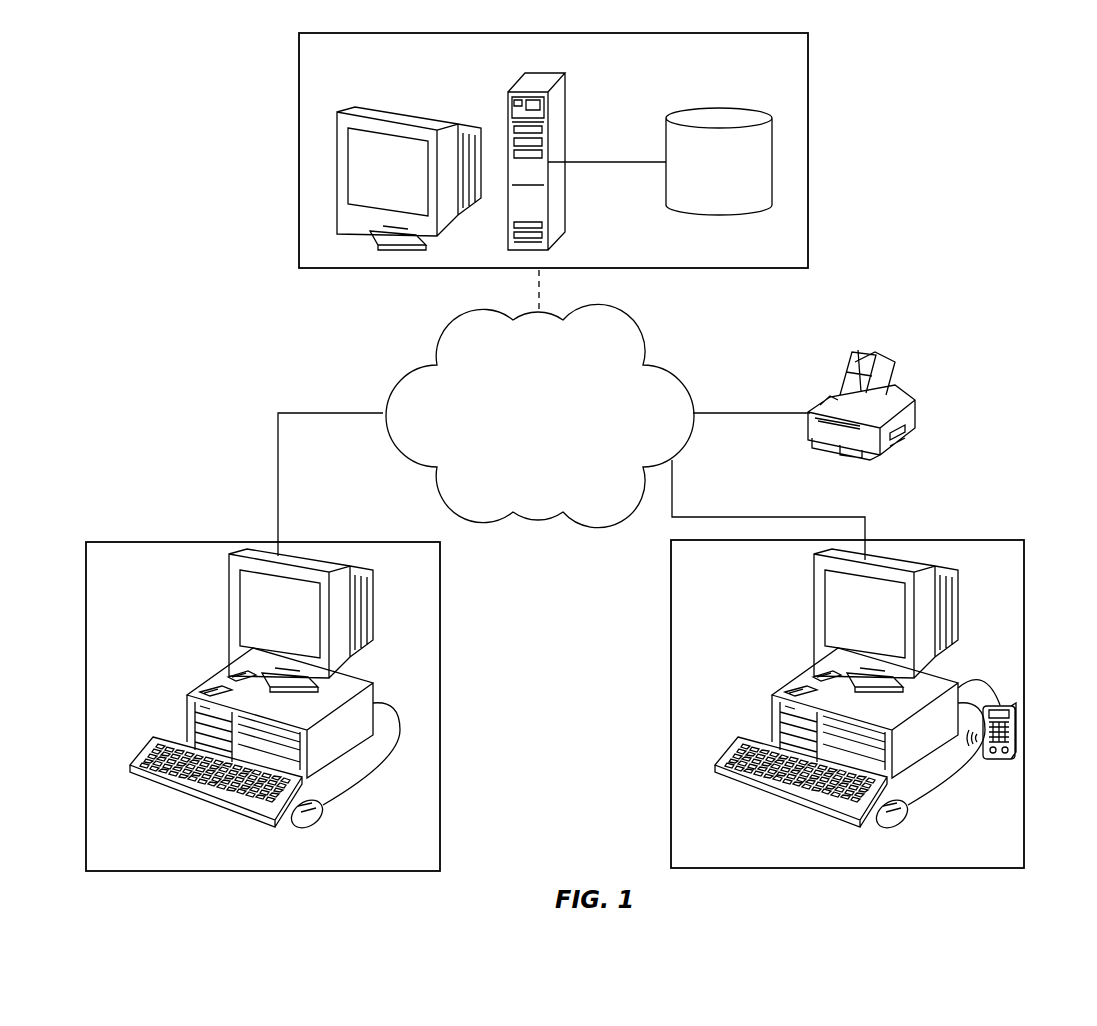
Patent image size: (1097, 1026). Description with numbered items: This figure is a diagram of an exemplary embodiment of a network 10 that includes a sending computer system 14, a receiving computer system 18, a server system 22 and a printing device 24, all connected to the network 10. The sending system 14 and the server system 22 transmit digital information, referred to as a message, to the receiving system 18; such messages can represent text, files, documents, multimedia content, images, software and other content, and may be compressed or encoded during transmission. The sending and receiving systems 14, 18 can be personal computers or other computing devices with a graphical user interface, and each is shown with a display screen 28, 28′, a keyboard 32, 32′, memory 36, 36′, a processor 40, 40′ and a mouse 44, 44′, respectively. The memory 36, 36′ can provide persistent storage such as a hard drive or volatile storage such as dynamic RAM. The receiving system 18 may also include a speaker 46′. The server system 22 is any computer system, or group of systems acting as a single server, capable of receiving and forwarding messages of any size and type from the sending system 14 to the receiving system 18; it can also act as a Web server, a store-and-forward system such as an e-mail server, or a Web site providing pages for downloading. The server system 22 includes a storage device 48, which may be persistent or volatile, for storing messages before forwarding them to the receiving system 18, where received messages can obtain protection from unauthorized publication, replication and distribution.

The network 10 is at (618, 318).
The sending computer system 14 is at (130, 540).
The receiving computer system 18 is at (980, 540).
The server system 22 is at (808, 88).
The printing device 24 is at (912, 408).
The display screen 28 is at (228, 600).
The display screen 28′ is at (851, 620).
The keyboard 32 is at (168, 735).
The keyboard 32′ is at (792, 767).
The memory 36 is at (210, 690).
The memory 36′ is at (777, 678).
The processor 40 is at (232, 670).
The processor 40′ is at (799, 656).
The mouse 44 is at (325, 810).
The mouse 44′ is at (928, 768).
The speaker 46′ is at (1020, 719).
The storage device 48 is at (762, 160).